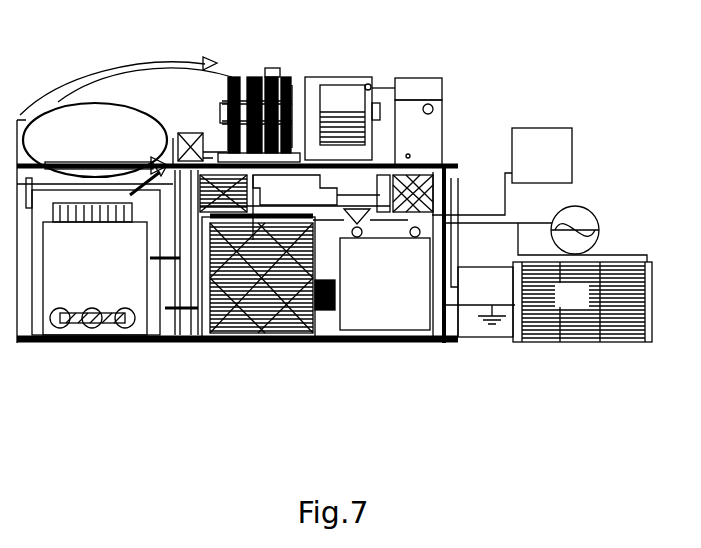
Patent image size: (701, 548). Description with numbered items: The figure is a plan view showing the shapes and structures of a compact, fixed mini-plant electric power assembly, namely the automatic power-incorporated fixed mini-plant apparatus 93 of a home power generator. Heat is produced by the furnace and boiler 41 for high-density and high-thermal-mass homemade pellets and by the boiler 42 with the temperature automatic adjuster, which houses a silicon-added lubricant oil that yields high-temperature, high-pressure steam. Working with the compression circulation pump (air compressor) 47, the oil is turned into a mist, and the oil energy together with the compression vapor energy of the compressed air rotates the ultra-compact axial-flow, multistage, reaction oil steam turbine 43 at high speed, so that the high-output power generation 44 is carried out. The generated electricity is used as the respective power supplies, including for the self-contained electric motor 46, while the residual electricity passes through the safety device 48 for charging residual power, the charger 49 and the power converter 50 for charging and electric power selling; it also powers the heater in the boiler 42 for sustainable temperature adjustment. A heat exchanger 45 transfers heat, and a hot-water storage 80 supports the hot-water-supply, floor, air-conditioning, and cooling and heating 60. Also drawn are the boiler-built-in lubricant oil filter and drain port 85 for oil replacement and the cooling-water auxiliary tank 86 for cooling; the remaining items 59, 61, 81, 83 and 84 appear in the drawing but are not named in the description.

The furnace and boiler for high-density and high-thermal-mass pellets 41 is at (95, 269).
The boiler with temperature automatic adjuster 42 is at (95, 149).
The ultra-compact axial-flow multistage reaction oil steam turbine 43 is at (260, 80).
The high-output power generation 44 is at (350, 118).
The heat exchanger 45 is at (210, 325).
The electric motor 46 is at (290, 90).
The compression circulation pump (air compressor) 47 is at (287, 90).
The safety device for charging residual power 48 is at (418, 90).
The charger 49 is at (385, 284).
The power converter 50 is at (418, 132).
The AC power source 59 is at (598, 213).
The hot-water-supply, floor, air-conditioning, and cooling and heating 60 is at (582, 302).
The housing wall 61 is at (440, 165).
The hot-water storage 80 is at (190, 337).
The power line 81 is at (582, 242).
The air flow path 83 is at (122, 91).
The air flow arrow 84 is at (180, 145).
The boiler-built-in lubricant oil filter and drain port 85 is at (343, 342).
The cooling-water auxiliary tank 86 is at (502, 171).
The automatic power-incorporated fixed mini-plant apparatus 93 is at (266, 283).